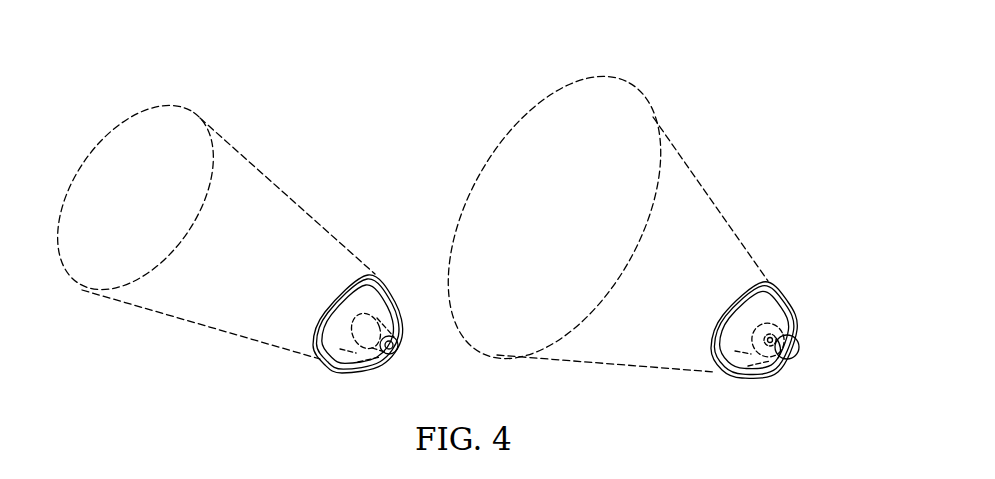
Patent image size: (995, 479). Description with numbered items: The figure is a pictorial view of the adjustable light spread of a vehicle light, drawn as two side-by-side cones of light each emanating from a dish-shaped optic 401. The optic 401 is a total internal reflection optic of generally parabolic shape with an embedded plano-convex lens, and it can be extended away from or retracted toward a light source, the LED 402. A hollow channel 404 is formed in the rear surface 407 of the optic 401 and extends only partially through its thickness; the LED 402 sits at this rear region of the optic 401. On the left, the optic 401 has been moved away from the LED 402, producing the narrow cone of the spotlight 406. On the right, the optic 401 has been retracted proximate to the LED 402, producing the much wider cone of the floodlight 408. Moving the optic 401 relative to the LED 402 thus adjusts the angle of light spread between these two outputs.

The optic 401 is at (350, 322).
The LED 402 is at (393, 346).
The hollow channel 404 is at (388, 322).
The spotlight 406 is at (136, 109).
The rear surface 407 is at (390, 349).
The floodlight 408 is at (553, 95).